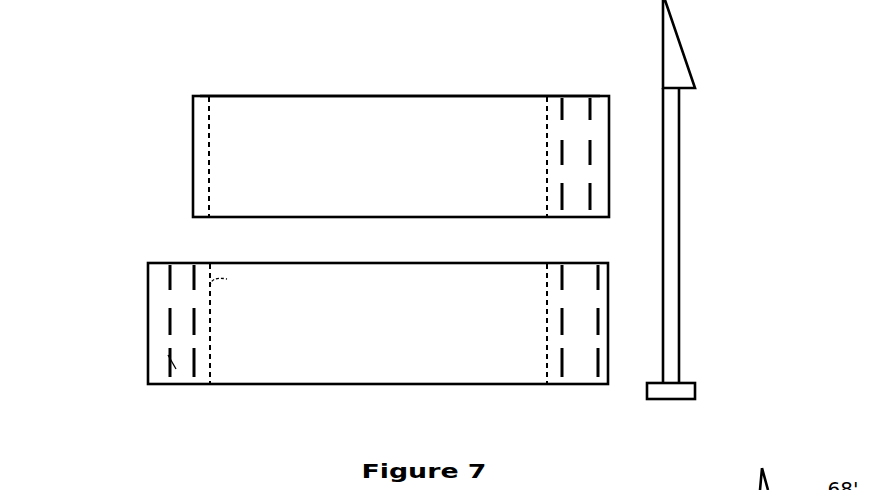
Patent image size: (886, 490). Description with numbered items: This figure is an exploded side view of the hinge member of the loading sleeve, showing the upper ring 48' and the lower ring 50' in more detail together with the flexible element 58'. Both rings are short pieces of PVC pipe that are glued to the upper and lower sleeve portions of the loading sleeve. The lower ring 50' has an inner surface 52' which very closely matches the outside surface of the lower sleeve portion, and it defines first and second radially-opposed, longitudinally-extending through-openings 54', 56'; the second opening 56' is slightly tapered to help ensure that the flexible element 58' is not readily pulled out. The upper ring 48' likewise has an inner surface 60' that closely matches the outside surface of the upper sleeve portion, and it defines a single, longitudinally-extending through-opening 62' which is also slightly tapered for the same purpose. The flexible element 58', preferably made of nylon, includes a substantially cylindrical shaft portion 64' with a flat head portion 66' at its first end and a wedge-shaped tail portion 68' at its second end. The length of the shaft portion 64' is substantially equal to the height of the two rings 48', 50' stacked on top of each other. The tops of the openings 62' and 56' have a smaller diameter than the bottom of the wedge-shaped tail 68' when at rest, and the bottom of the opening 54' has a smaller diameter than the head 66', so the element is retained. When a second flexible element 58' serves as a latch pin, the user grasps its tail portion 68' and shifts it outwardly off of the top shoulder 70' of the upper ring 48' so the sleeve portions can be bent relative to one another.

The upper ring 48' is at (348, 145).
The top shoulder 70' is at (400, 70).
The inner surface 60' is at (522, 116).
The through-opening 62' is at (578, 119).
The lower ring 50' is at (317, 323).
The inner surface 52' is at (166, 295).
The second through-opening 56' is at (137, 356).
The first through-opening 54' is at (600, 356).
The flexible element 58' is at (753, 199).
The wedge-shaped tail portion 68' is at (727, 44).
The shaft portion 64' is at (734, 235).
The flat head portion 66' is at (713, 361).